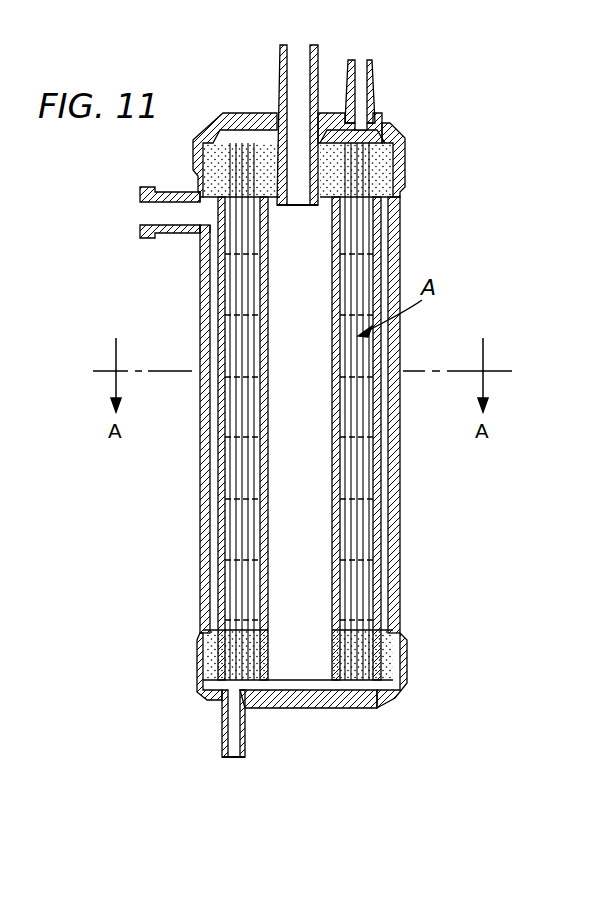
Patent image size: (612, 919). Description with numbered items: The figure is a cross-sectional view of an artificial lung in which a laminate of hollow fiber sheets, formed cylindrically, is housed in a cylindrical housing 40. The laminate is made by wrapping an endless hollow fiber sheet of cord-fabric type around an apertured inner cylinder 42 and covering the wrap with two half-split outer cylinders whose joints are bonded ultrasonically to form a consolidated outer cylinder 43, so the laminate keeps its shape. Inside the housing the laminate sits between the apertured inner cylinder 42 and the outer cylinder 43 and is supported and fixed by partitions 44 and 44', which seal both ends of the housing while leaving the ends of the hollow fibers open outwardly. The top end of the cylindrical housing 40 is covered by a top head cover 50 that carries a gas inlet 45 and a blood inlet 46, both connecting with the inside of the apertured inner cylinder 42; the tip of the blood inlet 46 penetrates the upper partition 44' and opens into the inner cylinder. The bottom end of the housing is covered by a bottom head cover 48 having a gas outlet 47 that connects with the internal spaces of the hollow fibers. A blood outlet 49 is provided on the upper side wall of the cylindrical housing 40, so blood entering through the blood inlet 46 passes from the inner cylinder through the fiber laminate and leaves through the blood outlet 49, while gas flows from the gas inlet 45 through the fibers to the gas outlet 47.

The cylindrical housing 40 is at (401, 528).
The apertured inner cylinder 42 is at (265, 437).
The outer cylinder 43 is at (219, 527).
The partition 44 is at (321, 680).
The upper partition 44' is at (422, 144).
The gas inlet 45 is at (368, 60).
The blood inlet 46 is at (304, 45).
The gas outlet 47 is at (228, 757).
The bottom head cover 48 is at (333, 710).
The blood outlet 49 is at (158, 230).
The top head cover 50 is at (231, 113).